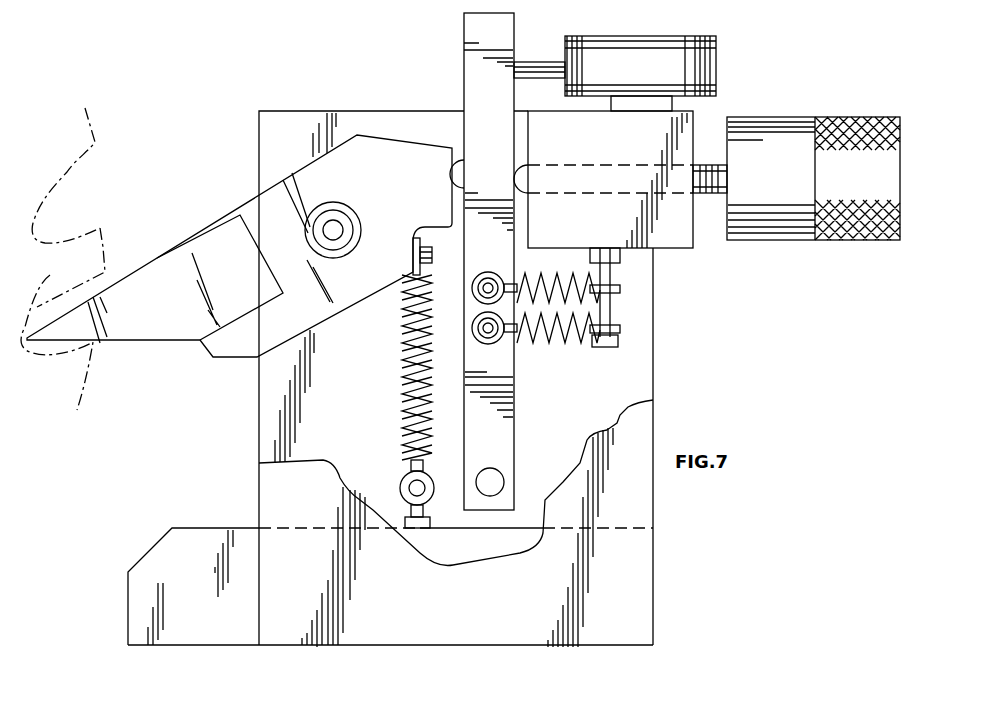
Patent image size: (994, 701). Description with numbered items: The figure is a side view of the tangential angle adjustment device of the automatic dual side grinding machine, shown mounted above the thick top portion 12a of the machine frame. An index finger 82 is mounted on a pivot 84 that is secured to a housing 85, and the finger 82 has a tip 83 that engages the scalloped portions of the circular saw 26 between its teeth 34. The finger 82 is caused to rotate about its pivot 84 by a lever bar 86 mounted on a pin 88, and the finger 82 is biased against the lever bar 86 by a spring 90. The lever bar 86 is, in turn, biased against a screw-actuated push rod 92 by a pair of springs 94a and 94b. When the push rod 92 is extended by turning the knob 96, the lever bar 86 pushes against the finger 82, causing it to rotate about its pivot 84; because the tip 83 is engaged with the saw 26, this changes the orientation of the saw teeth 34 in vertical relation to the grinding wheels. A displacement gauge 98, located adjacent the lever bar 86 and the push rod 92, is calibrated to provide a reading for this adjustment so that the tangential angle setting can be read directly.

The top portion 12a is at (215, 604).
The circular saw 26 is at (95, 140).
The teeth 34 is at (100, 228).
The index finger 82 is at (183, 238).
The tip 83 is at (35, 300).
The pivot 84 is at (333, 230).
The housing 85 is at (412, 111).
The lever bar 86 is at (464, 77).
The pin 88 is at (492, 482).
The spring 90 is at (400, 403).
The screw-actuated push rod 92 is at (572, 165).
The spring 94a is at (574, 276).
The spring 94b is at (540, 343).
The knob 96 is at (890, 117).
The displacement gauge 98 is at (716, 78).